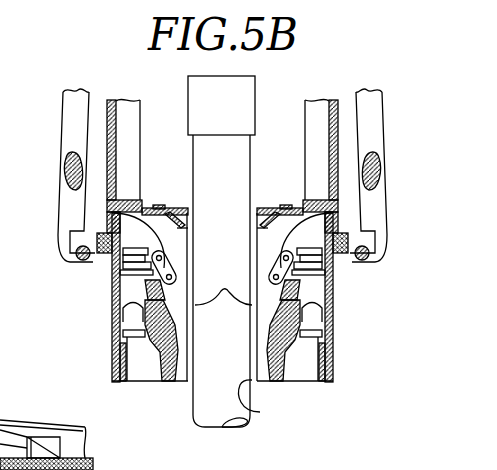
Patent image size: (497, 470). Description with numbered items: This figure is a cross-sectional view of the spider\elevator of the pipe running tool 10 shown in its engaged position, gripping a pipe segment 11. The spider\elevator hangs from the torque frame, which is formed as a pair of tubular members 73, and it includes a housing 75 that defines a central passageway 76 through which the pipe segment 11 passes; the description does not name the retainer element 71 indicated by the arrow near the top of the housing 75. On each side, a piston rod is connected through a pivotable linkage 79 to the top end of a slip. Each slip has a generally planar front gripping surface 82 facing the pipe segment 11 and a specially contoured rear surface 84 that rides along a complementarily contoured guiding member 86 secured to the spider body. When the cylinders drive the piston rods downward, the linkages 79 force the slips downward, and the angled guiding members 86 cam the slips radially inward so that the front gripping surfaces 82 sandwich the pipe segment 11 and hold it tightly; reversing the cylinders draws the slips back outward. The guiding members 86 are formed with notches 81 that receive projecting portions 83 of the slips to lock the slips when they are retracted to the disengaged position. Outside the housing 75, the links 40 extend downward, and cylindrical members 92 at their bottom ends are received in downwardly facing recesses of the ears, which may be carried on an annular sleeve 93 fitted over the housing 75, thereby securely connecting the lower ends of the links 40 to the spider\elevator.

The pipe running tool 10 is at (16, 72).
The pipe segment 11 is at (236, 248).
The links 40 is at (72, 125).
The retainer plate 71 is at (164, 176).
The tubular members 73 is at (108, 102).
The housing 75 is at (333, 350).
The central passageway 76 is at (260, 412).
The pivotable linkages 79 is at (111, 211).
The notches 81 is at (160, 286).
The front gripping surfaces 82 is at (223, 281).
The projecting portions 83 is at (178, 333).
The rear surfaces 84 is at (303, 307).
The guiding members 86 is at (176, 380).
The cylindrical members 92 is at (70, 261).
The annular sleeve 93 is at (88, 259).